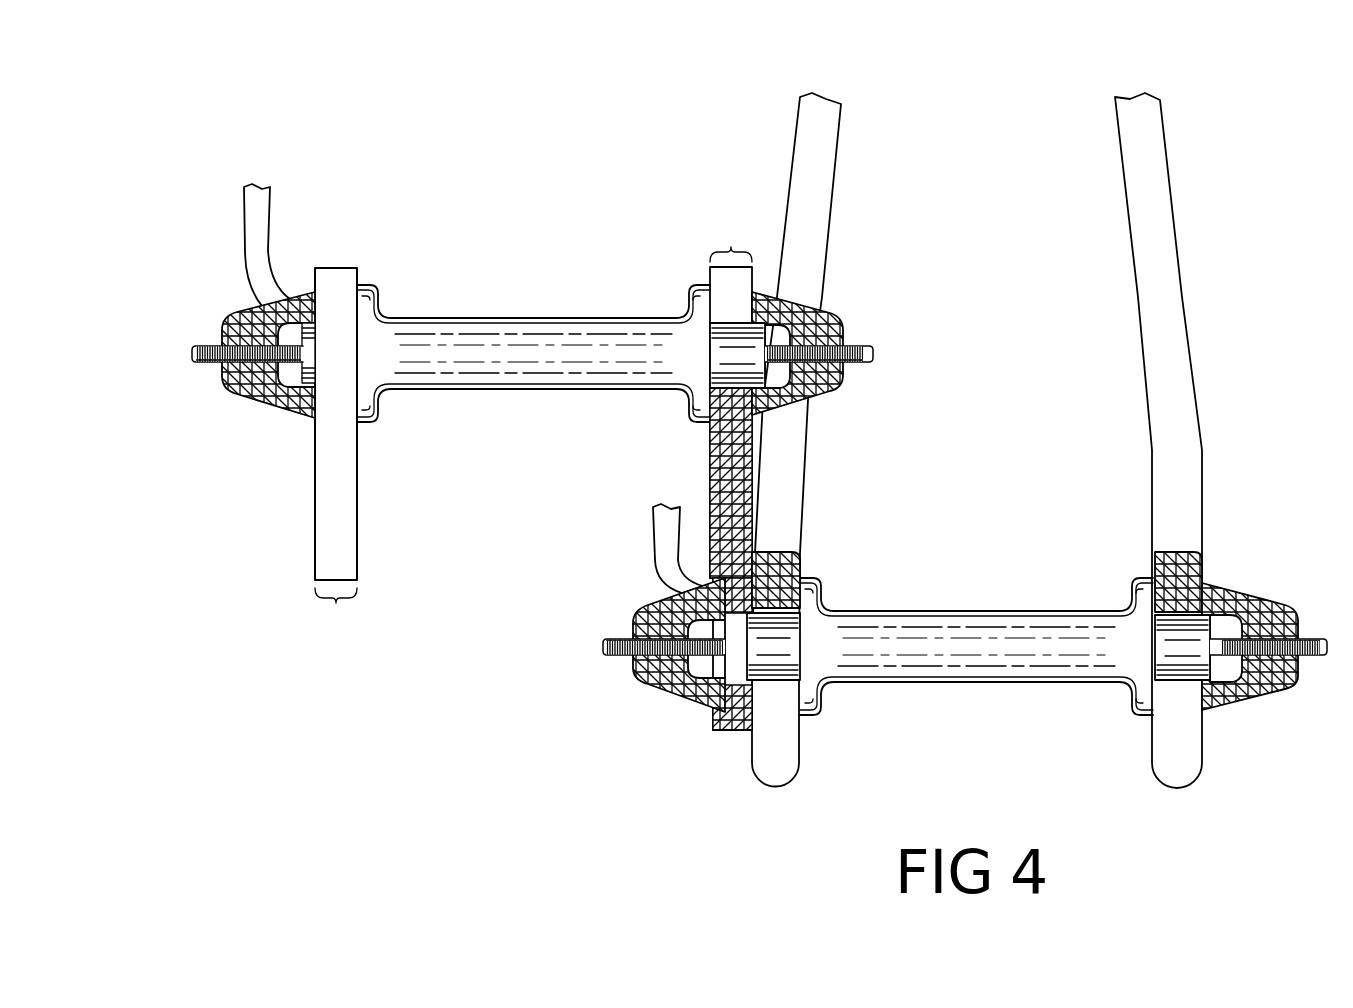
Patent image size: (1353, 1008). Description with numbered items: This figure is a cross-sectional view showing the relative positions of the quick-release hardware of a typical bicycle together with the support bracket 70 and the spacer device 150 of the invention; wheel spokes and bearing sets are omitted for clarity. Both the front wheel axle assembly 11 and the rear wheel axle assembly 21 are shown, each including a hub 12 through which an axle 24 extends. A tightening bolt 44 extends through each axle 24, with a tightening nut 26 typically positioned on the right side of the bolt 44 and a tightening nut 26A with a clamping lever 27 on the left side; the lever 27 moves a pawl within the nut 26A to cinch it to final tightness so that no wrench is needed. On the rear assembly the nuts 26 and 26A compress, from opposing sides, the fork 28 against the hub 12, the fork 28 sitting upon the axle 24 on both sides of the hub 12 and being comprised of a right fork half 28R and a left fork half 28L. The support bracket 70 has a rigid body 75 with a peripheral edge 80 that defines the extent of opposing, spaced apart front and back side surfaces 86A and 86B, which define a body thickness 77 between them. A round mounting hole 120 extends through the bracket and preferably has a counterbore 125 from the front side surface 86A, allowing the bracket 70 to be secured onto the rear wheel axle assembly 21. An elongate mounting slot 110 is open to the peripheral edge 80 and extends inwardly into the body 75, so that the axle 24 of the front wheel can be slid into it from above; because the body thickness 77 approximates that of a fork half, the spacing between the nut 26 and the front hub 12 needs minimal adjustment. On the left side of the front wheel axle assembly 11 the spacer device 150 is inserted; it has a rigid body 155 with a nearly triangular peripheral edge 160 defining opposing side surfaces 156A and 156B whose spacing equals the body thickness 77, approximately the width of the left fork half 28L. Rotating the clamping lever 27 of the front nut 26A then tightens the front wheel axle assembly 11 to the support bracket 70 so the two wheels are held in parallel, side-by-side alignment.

The front wheel axle assembly 11 is at (485, 120).
The hub 12 is at (465, 307).
The rear wheel axle assembly 21 is at (1093, 732).
The axle 24 is at (760, 333).
The tightening nut 26 is at (840, 306).
The tightening nut 26A is at (250, 400).
The clamping lever 27 is at (243, 230).
The fork 28 is at (1073, 183).
The left fork half 28L is at (832, 122).
The right fork half 28R is at (1147, 127).
The tightening bolt 44 is at (192, 352).
The support bracket 70 is at (722, 272).
The rigid body 75 is at (695, 437).
The body thickness 77 is at (533, 423).
The peripheral edge 80 is at (735, 732).
The front side surface 86A is at (709, 497).
The back side surface 86B is at (758, 428).
The mounting slot 110 is at (735, 340).
The mounting hole 120 is at (643, 606).
The counterbore 125 is at (712, 714).
The spacer device 150 is at (368, 244).
The rigid body 155 is at (375, 443).
The side surface 156A is at (315, 533).
The side surface 156B is at (355, 477).
The peripheral edge 160 is at (343, 520).